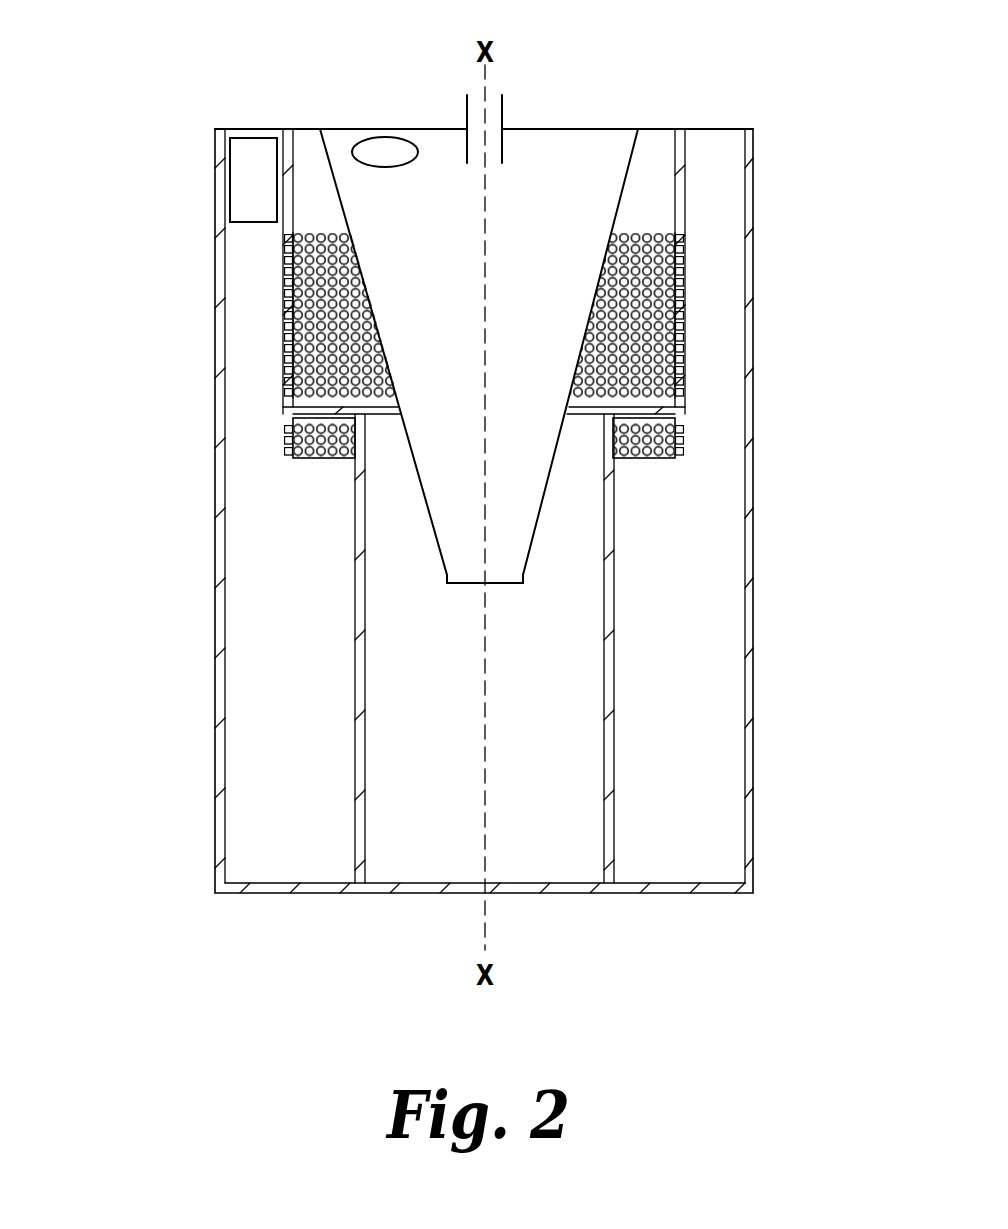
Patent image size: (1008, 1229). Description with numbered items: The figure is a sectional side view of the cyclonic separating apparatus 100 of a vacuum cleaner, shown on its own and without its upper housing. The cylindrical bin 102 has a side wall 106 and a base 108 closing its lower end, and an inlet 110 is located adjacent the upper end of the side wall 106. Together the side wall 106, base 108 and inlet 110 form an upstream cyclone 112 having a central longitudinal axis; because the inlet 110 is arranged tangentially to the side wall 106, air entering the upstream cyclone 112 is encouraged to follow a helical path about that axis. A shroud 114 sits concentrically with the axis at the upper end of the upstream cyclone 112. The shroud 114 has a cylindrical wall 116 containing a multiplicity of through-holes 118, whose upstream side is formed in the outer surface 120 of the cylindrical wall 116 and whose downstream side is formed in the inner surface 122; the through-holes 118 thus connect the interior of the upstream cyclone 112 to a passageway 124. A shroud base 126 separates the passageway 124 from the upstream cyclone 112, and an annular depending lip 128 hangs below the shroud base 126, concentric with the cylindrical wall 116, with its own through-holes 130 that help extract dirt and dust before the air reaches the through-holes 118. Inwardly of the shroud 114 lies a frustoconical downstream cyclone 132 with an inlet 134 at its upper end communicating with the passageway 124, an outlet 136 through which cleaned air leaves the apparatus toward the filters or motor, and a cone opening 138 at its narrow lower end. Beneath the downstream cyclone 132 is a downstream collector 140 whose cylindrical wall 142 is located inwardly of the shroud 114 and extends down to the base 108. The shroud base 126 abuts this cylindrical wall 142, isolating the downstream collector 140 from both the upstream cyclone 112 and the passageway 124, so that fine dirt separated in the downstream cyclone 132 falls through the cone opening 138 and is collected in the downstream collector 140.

The cyclonic separating apparatus 100 is at (162, 331).
The cylindrical bin 102 is at (206, 607).
The side wall 106 is at (218, 722).
The base 108 is at (265, 893).
The inlet 110 is at (250, 168).
The upstream cyclone 112 is at (712, 607).
The shroud 114 is at (685, 281).
The cylindrical wall 116 is at (685, 170).
The through-holes 118 is at (290, 374).
The outer surface 120 is at (290, 282).
The inner surface 122 is at (299, 146).
The passageway 124 is at (660, 205).
The shroud base 126 is at (658, 412).
The annular depending lip 128 is at (685, 438).
The through-holes 130 is at (288, 448).
The downstream cyclone 132 is at (330, 142).
The inlet 134 is at (380, 147).
The outlet 136 is at (502, 113).
The cone opening 138 is at (500, 583).
The downstream collector 140 is at (436, 687).
The cylindrical wall 142 is at (618, 825).